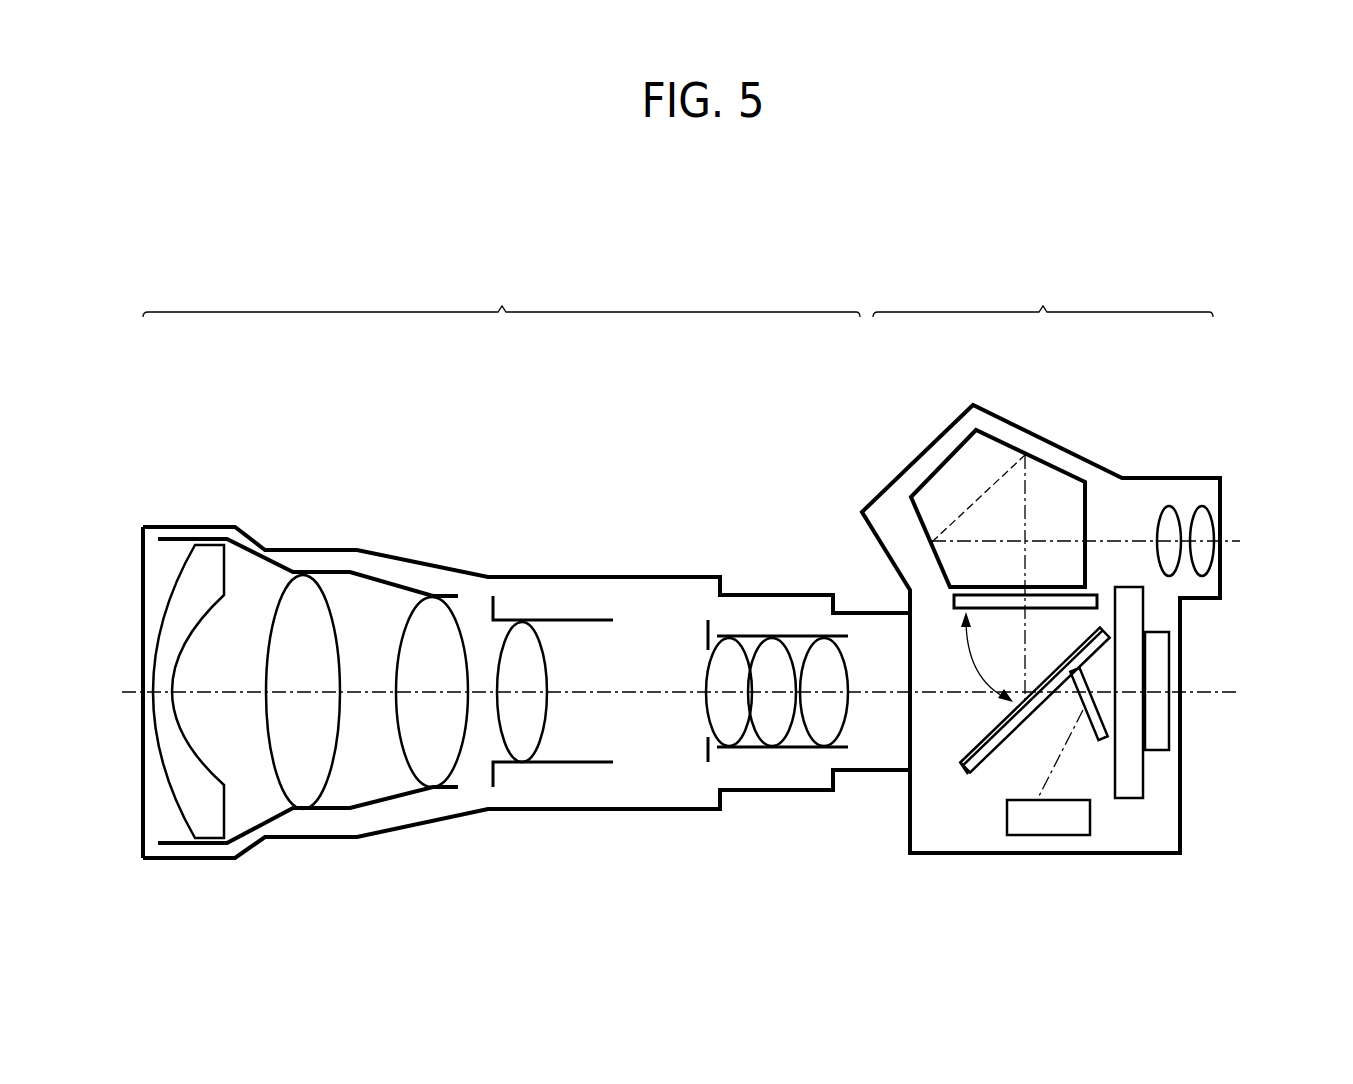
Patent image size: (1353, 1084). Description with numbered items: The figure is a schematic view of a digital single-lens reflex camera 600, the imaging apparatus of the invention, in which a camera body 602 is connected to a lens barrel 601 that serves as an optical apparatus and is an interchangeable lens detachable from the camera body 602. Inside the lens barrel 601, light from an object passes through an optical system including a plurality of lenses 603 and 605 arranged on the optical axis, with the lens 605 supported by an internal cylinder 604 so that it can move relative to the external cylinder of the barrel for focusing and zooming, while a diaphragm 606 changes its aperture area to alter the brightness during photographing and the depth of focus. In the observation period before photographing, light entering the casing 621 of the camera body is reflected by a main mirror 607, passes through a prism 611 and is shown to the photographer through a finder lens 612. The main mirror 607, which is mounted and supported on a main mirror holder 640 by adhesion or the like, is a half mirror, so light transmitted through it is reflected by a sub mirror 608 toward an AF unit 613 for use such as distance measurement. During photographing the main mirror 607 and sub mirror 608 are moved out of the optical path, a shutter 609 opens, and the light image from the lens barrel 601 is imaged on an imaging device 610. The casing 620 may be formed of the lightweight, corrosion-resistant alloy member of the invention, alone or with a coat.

The digital single-lens reflex camera 600 is at (728, 238).
The lens barrel 601 is at (501, 296).
The camera body 602 is at (1043, 297).
The lens 603 is at (215, 540).
The casing 620 is at (398, 560).
The internal cylinder 604 is at (540, 620).
The lens 605 is at (522, 742).
The diaphragm 606 is at (705, 622).
The casing 621 is at (876, 483).
The prism 611 is at (1068, 497).
The finder lens 612 is at (1202, 500).
The main mirror 607 is at (960, 758).
The sub mirror 608 is at (1085, 702).
The shutter 609 is at (1133, 773).
The imaging device 610 is at (1155, 727).
The AF unit 613 is at (1047, 837).
The main mirror holder 640 is at (965, 770).